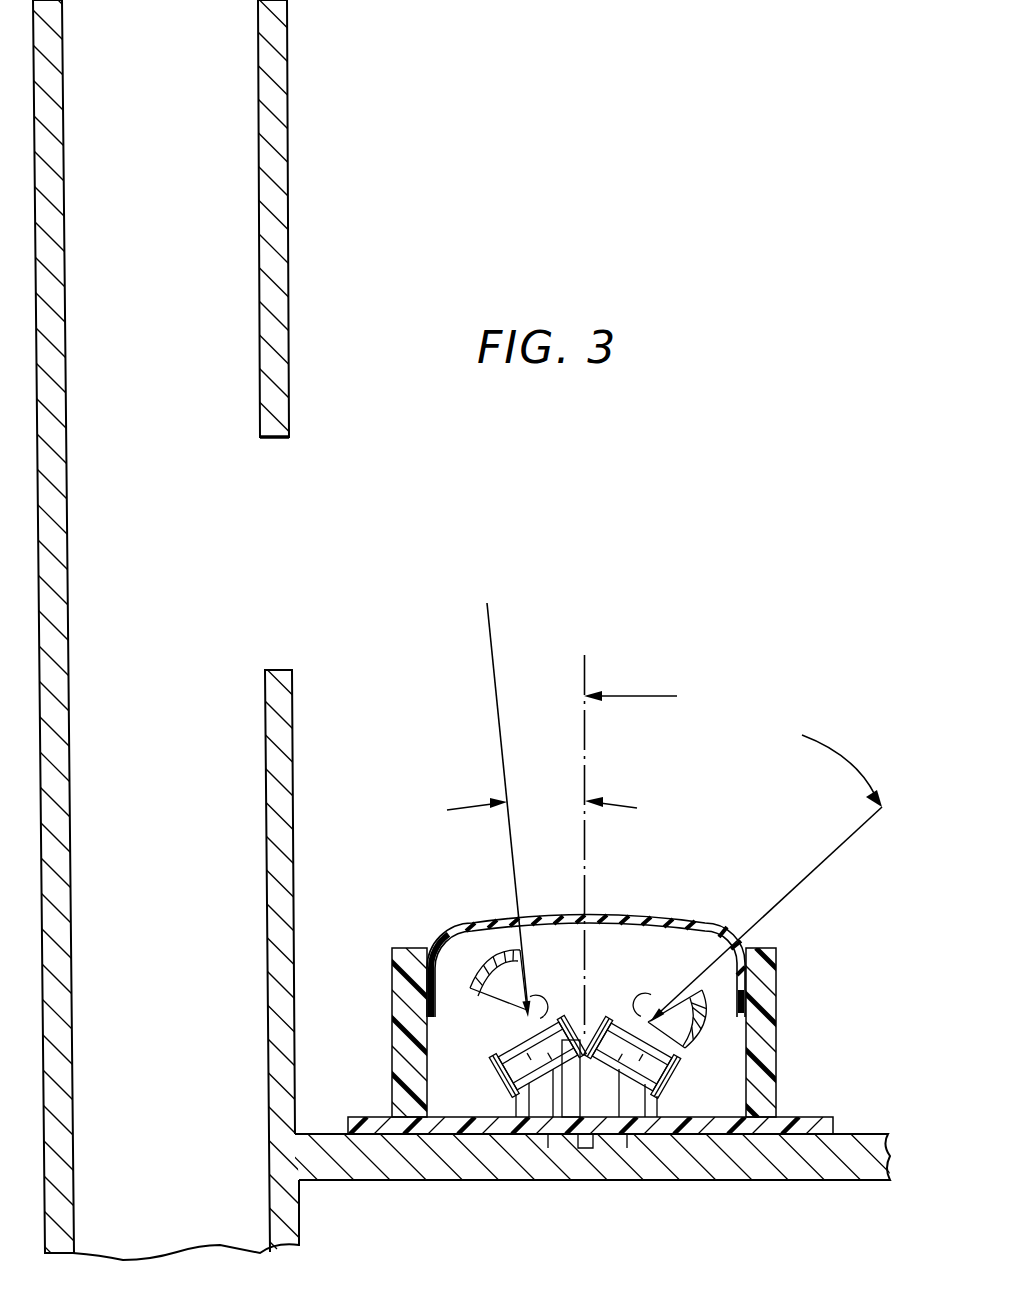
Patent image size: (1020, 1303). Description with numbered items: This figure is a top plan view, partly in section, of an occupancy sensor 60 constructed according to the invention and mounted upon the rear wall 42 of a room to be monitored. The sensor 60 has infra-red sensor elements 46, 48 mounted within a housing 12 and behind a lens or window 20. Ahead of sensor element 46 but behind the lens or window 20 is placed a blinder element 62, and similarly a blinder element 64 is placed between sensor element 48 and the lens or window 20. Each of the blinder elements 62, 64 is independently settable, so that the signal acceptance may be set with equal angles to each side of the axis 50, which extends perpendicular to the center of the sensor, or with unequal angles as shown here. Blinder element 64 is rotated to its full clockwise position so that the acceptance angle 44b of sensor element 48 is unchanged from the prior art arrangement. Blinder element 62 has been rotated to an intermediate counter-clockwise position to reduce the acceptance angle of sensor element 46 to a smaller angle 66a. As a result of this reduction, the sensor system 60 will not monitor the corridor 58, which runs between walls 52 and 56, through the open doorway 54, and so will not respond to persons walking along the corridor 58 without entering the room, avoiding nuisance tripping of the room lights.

The housing 12 is at (782, 1097).
The lens or window 20 is at (483, 923).
The rear wall 42 is at (822, 1173).
The acceptance angle 44b is at (766, 862).
The sensor element 46 is at (503, 1075).
The sensor element 48 is at (672, 1082).
The axis 50 is at (585, 685).
The wall 52 is at (286, 181).
The doorway 54 is at (250, 508).
The wall 56 is at (66, 290).
The corridor 58 is at (172, 185).
The occupancy sensor 60 is at (781, 1018).
The blinder element 62 is at (494, 1002).
The blinder element 64 is at (670, 990).
The angle 66a is at (447, 808).